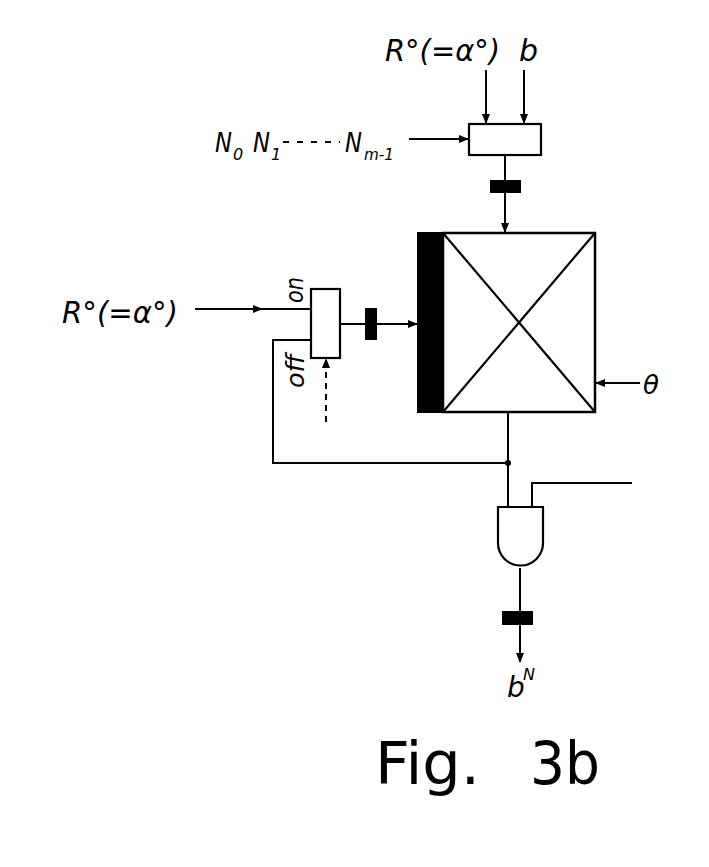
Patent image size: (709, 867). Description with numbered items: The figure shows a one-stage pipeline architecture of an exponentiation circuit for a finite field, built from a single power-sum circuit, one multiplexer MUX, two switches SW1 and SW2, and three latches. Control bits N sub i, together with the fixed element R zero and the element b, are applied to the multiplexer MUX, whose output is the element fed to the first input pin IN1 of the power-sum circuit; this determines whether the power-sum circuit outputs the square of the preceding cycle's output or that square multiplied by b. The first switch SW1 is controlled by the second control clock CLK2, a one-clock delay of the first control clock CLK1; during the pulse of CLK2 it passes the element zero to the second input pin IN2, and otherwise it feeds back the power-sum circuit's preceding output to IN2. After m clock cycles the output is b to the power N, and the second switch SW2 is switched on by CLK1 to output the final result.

The multiplexer MUX is at (505, 141).
The first switch SW1 is at (325, 323).
The second switch SW2 is at (548, 536).
The first input pin IN1 is at (503, 232).
The second input pin IN2 is at (417, 322).
The first control clock CLK1 is at (616, 490).
The second control clock CLK2 is at (327, 407).